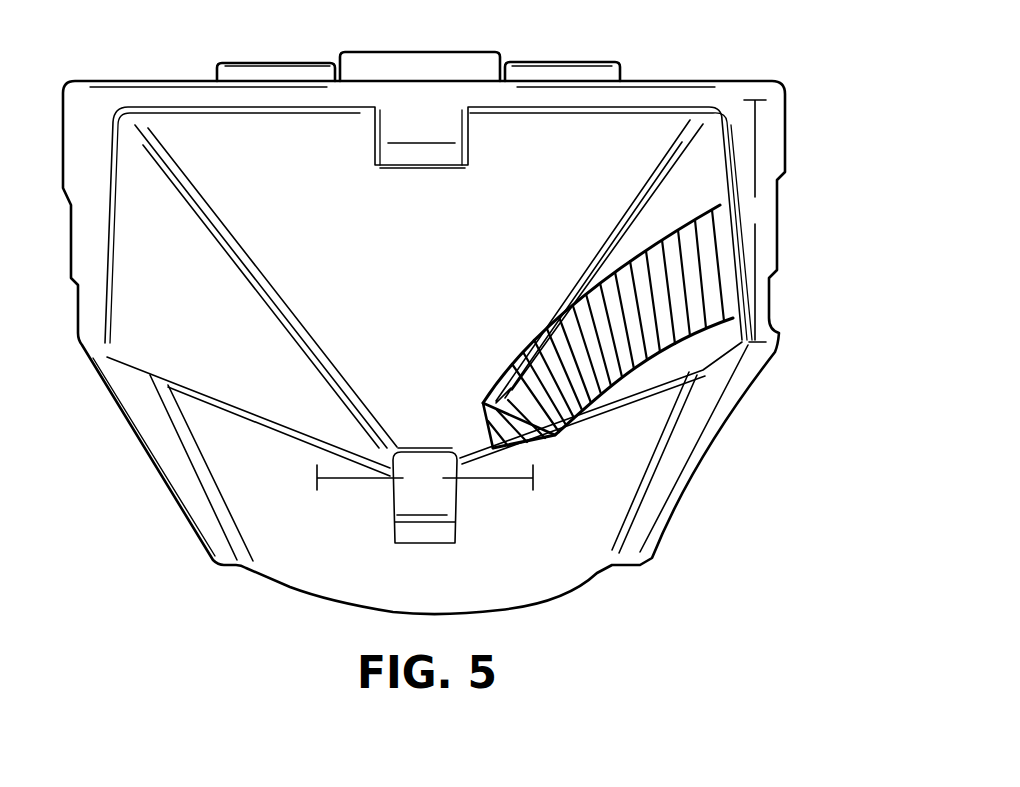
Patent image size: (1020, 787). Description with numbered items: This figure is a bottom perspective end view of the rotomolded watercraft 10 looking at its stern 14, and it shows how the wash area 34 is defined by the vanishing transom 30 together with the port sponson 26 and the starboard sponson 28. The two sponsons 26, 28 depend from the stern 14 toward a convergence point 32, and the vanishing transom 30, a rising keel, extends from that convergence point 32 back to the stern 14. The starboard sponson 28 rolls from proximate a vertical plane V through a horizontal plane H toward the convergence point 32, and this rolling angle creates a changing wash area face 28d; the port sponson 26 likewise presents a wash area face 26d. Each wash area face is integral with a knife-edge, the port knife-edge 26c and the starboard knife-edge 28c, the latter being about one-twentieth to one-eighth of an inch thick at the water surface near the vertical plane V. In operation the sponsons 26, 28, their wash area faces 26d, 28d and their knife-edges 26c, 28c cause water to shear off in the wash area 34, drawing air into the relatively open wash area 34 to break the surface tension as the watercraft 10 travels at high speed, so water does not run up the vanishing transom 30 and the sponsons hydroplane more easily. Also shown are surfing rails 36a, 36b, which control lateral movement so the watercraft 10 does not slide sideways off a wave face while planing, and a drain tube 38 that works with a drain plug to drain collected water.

The watercraft 10 is at (668, 52).
The stern 14 is at (708, 94).
The port sponson 26 is at (90, 372).
The knife-edge 26c is at (152, 375).
The wash area face 26d is at (202, 309).
The starboard sponson 28 is at (762, 322).
The knife-edge 28c is at (722, 400).
The wash area face 28d is at (600, 257).
The vanishing transom 30 is at (440, 301).
The convergence point 32 is at (452, 451).
The wash area 34 is at (400, 197).
The surfing rail 36a is at (190, 482).
The surfing rail 36b is at (662, 477).
The drain tube 38 is at (432, 534).
The horizontal plane H is at (425, 478).
The vertical plane V is at (756, 221).